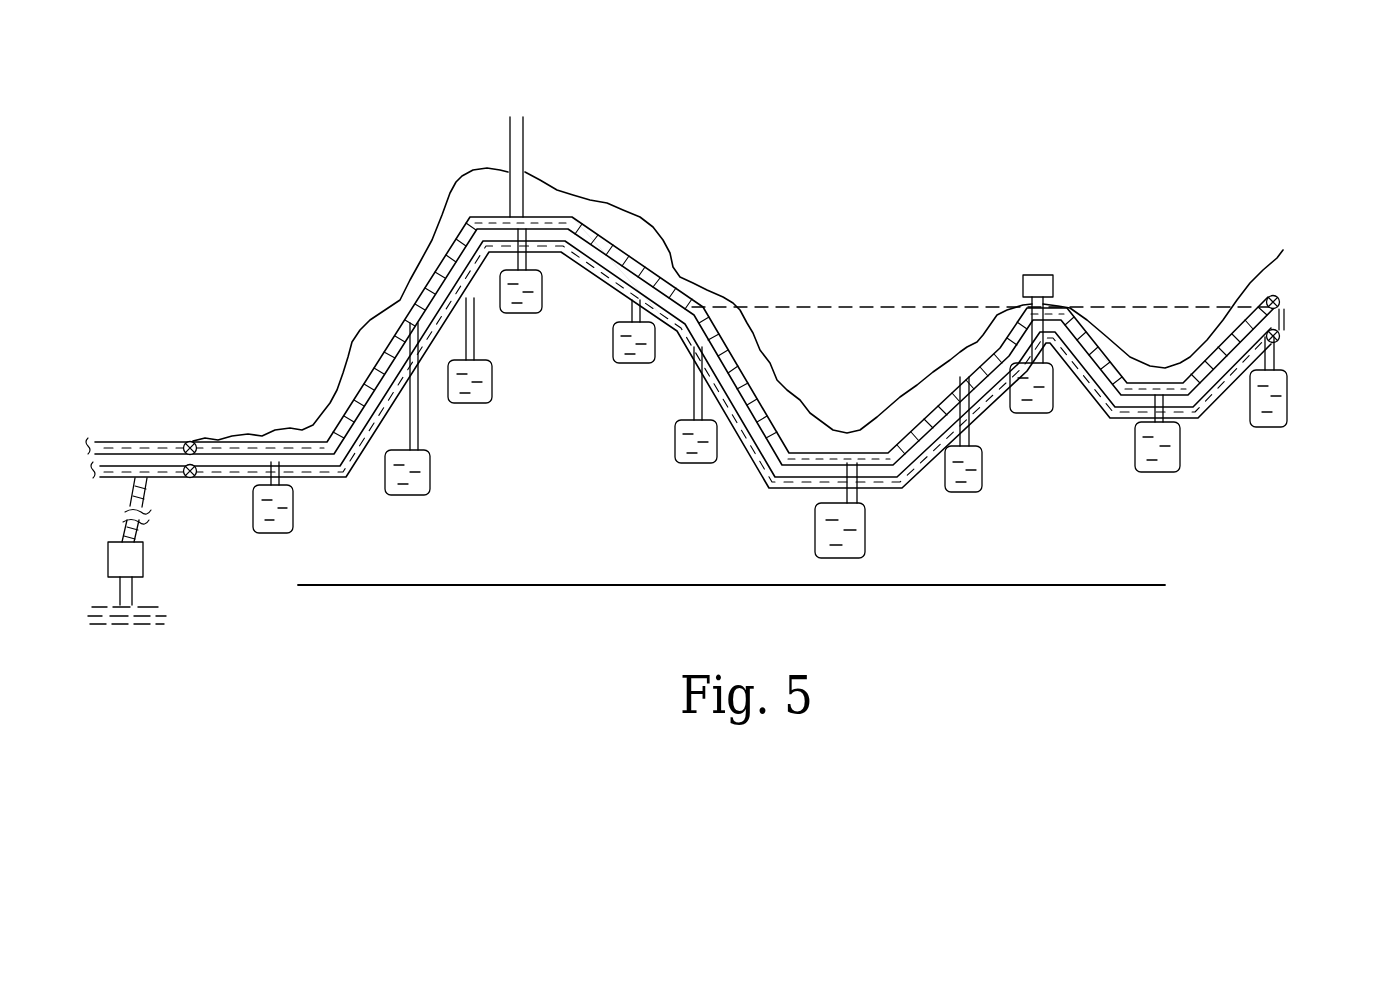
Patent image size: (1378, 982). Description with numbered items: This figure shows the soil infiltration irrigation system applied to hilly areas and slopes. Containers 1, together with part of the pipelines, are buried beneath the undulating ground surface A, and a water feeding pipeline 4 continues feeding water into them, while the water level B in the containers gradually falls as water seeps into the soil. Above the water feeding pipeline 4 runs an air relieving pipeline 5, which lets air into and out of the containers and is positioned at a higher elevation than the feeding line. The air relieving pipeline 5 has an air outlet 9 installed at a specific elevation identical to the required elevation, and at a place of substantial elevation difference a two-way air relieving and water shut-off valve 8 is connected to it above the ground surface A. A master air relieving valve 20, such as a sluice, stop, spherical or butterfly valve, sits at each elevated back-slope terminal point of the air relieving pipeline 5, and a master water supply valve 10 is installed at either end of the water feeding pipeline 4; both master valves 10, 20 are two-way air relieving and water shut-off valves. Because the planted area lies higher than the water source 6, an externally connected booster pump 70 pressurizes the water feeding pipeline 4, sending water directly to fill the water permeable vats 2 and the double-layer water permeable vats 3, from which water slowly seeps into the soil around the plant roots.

The container 1 is at (680, 452).
The water permeable vat 2 is at (290, 522).
The double-layer water permeable vat 3 is at (856, 545).
The water feeding pipeline 4 is at (210, 477).
The air relieving pipeline 5 is at (612, 250).
The water source 6 is at (139, 632).
The two-way air relieving and water shut-off valve 8 is at (1040, 274).
The air outlet 9 is at (520, 157).
The master water supply valve 10 is at (185, 480).
The master air relieving valve 20 is at (196, 441).
The booster pump 70 is at (147, 570).
The ground surface A is at (1120, 327).
The water level B is at (868, 305).